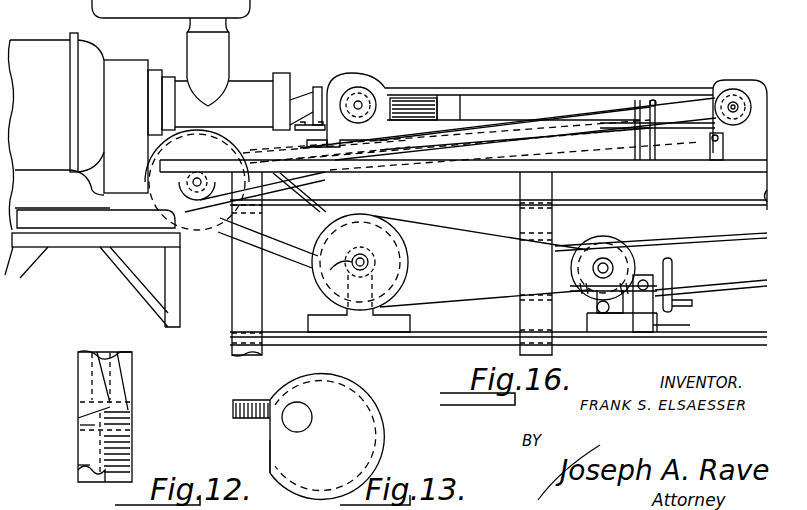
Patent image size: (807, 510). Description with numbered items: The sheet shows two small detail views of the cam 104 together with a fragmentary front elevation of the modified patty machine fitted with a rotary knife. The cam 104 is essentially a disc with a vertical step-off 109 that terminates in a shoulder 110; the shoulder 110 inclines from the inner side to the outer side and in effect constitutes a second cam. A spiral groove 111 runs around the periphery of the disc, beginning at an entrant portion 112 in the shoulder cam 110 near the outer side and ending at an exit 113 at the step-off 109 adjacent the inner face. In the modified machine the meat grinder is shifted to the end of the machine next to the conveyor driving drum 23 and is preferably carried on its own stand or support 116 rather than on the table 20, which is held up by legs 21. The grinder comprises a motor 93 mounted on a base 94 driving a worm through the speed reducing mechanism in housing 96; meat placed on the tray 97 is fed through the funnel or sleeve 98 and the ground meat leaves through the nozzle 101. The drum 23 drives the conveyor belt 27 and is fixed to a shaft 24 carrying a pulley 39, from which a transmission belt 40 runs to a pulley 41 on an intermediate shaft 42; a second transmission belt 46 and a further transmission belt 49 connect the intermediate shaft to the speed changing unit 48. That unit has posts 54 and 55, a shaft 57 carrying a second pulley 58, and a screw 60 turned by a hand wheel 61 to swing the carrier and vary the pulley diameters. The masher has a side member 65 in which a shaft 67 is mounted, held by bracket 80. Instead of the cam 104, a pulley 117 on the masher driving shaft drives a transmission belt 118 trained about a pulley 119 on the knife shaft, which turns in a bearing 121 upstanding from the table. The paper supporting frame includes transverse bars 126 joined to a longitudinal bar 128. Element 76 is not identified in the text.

In FIG. 16, the motor 93 is at (33, 50).
In FIG. 16, the base 94 is at (57, 228).
In FIG. 16, the housing 96 is at (137, 48).
In FIG. 16, the tray 97 is at (236, 2).
In FIG. 16, the funnel or sleeve 98 is at (220, 46).
In FIG. 16, the nozzle 101 is at (300, 95).
In FIG. 16, the bearing 121 is at (344, 78).
In FIG. 16, the pulley 119 is at (364, 90).
In FIG. 16, the transmission belt 118 is at (578, 72).
In FIG. 16, the bars 126 is at (326, 128).
In FIG. 16, the longitudinal member or bar 128 is at (305, 134).
In FIG. 16, the table member 20 is at (627, 167).
In FIG. 16, the table top beam 76 is at (300, 173).
In FIG. 16, the shaft 24 is at (205, 198).
In FIG. 16, the drum or pulley 23 is at (160, 212).
In FIG. 16, the pulley 39 is at (202, 226).
In FIG. 16, the stand or support 116 is at (80, 238).
In FIG. 16, the legs 21 is at (257, 305).
In FIG. 16, the belt 27 is at (722, 190).
In FIG. 16, the intermediate shaft 42 is at (375, 270).
In FIG. 16, the transmission belt 40 is at (293, 246).
In FIG. 16, the pulley 41 is at (320, 266).
In FIG. 16, the transmission belt 46 is at (448, 230).
In FIG. 16, the second pulley 58 is at (611, 242).
In FIG. 16, the shaft 57 is at (614, 262).
In FIG. 16, the screw 60 is at (570, 288).
In FIG. 16, the post 55 is at (594, 309).
In FIG. 16, the post 54 is at (585, 309).
In FIG. 16, the hand wheel 61 is at (673, 270).
In FIG. 16, the transmission belt 49 is at (728, 240).
In FIG. 16, the speed changing unit 48 is at (697, 329).
In FIG. 16, the side member 65 is at (765, 85).
In FIG. 16, the pulley 117 is at (742, 90).
In FIG. 16, the shaft 67 is at (752, 108).
In FIG. 16, the bracket 80 is at (723, 145).
In FIG. 12, the cam 104 is at (80, 380).
In FIG. 13, the cam 104 is at (340, 393).
In FIG. 12, the spiral groove 111 is at (118, 382).
In FIG. 13, the spiral groove 111 is at (280, 363).
In FIG. 12, the entrant portion 112 is at (126, 409).
In FIG. 12, the shoulder 110 is at (80, 425).
In FIG. 13, the shoulder 110 is at (232, 411).
In FIG. 12, the step-off 109 is at (122, 447).
In FIG. 13, the step-off 109 is at (272, 455).
In FIG. 12, the exit 113 is at (78, 465).